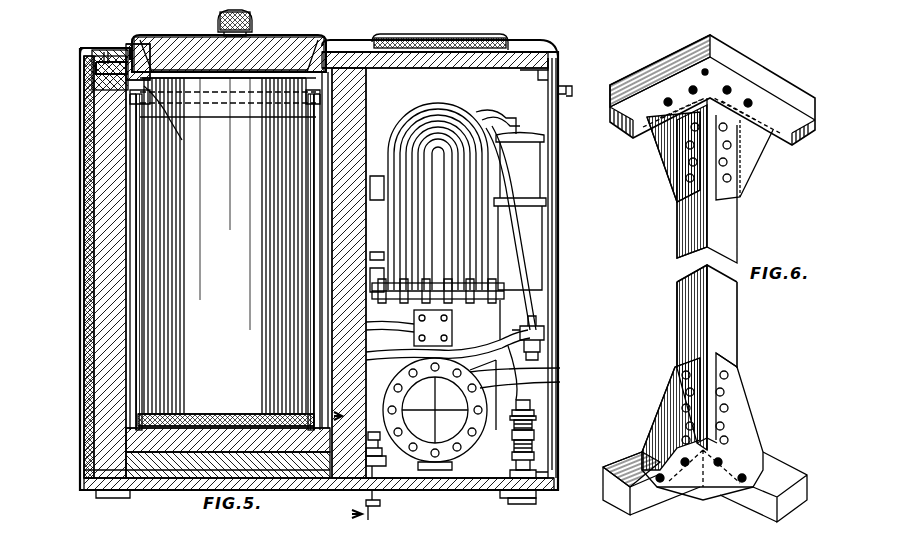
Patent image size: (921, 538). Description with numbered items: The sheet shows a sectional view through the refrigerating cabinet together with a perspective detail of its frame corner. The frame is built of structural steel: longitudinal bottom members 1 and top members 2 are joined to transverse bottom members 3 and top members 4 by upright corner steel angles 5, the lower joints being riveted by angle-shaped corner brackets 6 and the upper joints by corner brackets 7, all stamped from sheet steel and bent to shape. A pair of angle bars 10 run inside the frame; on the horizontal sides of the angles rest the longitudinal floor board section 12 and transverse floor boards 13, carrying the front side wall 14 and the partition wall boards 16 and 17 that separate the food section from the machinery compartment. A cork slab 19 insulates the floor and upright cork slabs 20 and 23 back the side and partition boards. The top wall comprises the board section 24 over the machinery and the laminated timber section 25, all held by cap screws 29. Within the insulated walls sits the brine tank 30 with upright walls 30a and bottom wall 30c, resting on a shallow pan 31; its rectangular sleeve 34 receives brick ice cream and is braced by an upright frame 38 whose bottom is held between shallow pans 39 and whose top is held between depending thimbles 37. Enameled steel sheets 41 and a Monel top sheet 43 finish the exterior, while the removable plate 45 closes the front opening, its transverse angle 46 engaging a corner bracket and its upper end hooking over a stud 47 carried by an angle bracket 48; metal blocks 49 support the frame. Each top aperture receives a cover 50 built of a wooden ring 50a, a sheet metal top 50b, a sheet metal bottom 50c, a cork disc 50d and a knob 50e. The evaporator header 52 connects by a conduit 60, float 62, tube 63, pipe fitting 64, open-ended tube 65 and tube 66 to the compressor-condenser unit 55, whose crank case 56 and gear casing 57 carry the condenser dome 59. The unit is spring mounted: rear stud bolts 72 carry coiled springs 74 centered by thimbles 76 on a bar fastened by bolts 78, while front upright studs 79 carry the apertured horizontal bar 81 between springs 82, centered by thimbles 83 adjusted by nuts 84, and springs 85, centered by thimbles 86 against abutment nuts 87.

In FIG. 5, the longitudinally extending bottom member 1 is at (82, 488).
In FIG. 6, the longitudinally extending bottom member 1 is at (786, 468).
In FIG. 5, the longitudinal top member 2 is at (96, 66).
In FIG. 6, the longitudinal top member 2 is at (762, 82).
In FIG. 6, the transverse bottom member 3 is at (620, 460).
In FIG. 5, the transverse top member 4 is at (347, 470).
In FIG. 6, the transverse top member 4 is at (648, 76).
In FIG. 6, the steel angle 5 is at (676, 244).
In FIG. 6, the corner bracket 6 is at (742, 410).
In FIG. 6, the corner bracket 7 is at (748, 172).
In FIG. 5, the angle bar 10 is at (340, 490).
In FIG. 5, the longitudinal floor board section 12 is at (480, 492).
In FIG. 5, the transverse floor board 13 is at (188, 490).
In FIG. 5, the side wall 14 is at (72, 426).
In FIG. 5, the partition wall board 16 is at (522, 50).
In FIG. 5, the partition wall board 17 is at (366, 112).
In FIG. 5, the slab of sheet cork 19 is at (160, 476).
In FIG. 5, the upright slab of cork 20 is at (84, 366).
In FIG. 5, the upright slab of cork 23 is at (360, 130).
In FIG. 5, the board section 24 is at (450, 66).
In FIG. 5, the longitudinally extending timber section 25 is at (104, 52).
In FIG. 5, the cap screw 29 is at (96, 48).
In FIG. 5, the sheet metal tank 30 is at (350, 200).
In FIG. 5, the upright wall 30a is at (130, 232).
In FIG. 5, the bottom wall 30c is at (176, 466).
In FIG. 5, the shallow sheet metal pan 31 is at (228, 440).
In FIG. 5, the sleeve 34 is at (138, 298).
In FIG. 5, the depending thimble 37 is at (171, 119).
In FIG. 5, the upright rectangular frame 38 is at (160, 286).
In FIG. 5, the shallow pan 39 is at (208, 414).
In FIG. 5, the enameled steel sheet 41 is at (84, 392).
In FIG. 5, the sheet of Monel metal 43 is at (552, 48).
In FIG. 5, the removable plate 45 is at (556, 318).
In FIG. 5, the transverse angle 46 is at (536, 448).
In FIG. 5, the stud 47 is at (572, 86).
In FIG. 5, the angle bracket 48 is at (544, 84).
In FIG. 5, the metal block 49 is at (106, 498).
In FIG. 5, the cover 50 is at (200, 38).
In FIG. 5, the wooden ring 50a is at (310, 40).
In FIG. 5, the sheet metal top 50b is at (258, 42).
In FIG. 5, the sheet metal bottom 50c is at (258, 104).
In FIG. 5, the heat-insulating disc 50d is at (216, 96).
In FIG. 5, the handle or knob 50e is at (226, 24).
In FIG. 6, the header 52 is at (668, 510).
In FIG. 5, the compressor-condenser mechanism 55 is at (544, 188).
In FIG. 5, the crank case structure 56 is at (534, 383).
In FIG. 5, the gear casing 57 is at (531, 363).
In FIG. 5, the condenser dome 59 is at (426, 116).
In FIG. 5, the conduit 60 is at (520, 370).
In FIG. 5, the float 62 is at (438, 291).
In FIG. 5, the tube 63 is at (368, 316).
In FIG. 5, the pipe fitting 64 is at (433, 328).
In FIG. 5, the open-ended tube 65 is at (528, 338).
In FIG. 5, the tube 66 is at (480, 128).
In FIG. 5, the stud bolt 72 is at (392, 450).
In FIG. 5, the coiled spring 74 is at (366, 460).
In FIG. 5, the thimble 76 is at (366, 444).
In FIG. 5, the bolt 78 is at (374, 508).
In FIG. 5, the upright stud 79 is at (522, 404).
In FIG. 5, the apertured horizontal bar 81 is at (512, 434).
In FIG. 5, the spring 82 is at (516, 458).
In FIG. 5, the centering thimble 83 is at (538, 474).
In FIG. 5, the nut 84 is at (510, 498).
In FIG. 5, the spring 85 is at (532, 424).
In FIG. 5, the centering thimble 86 is at (556, 403).
In FIG. 5, the abutment nut 87 is at (534, 412).